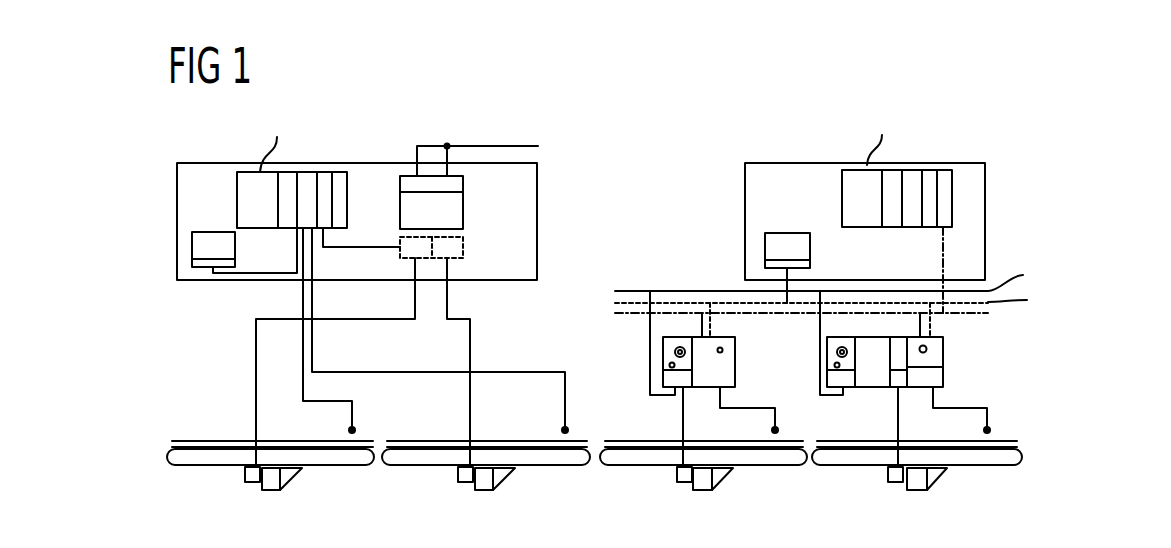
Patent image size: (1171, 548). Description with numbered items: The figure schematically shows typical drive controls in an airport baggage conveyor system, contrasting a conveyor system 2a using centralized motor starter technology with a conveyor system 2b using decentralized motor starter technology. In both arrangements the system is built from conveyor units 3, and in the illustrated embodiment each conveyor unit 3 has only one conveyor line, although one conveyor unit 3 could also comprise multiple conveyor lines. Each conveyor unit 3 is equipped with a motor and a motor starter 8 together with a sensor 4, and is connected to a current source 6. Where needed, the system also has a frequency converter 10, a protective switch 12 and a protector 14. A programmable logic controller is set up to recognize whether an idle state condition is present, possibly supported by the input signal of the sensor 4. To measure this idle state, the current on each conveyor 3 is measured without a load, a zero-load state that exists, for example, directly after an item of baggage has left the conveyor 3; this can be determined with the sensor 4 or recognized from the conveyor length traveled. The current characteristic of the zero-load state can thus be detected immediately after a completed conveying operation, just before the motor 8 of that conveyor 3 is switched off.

The conveyor system with centralized motor starter technology 2a is at (377, 156).
The conveyor system with decentralized motor starter technology 2b is at (819, 158).
The conveyor unit 3 is at (393, 468).
The sensor 4 is at (356, 431).
The current source 6 is at (198, 233).
The motor starter 8 is at (737, 360).
The frequency converter 10 is at (943, 360).
The protective switch 12 is at (463, 202).
The protector 14 is at (463, 238).